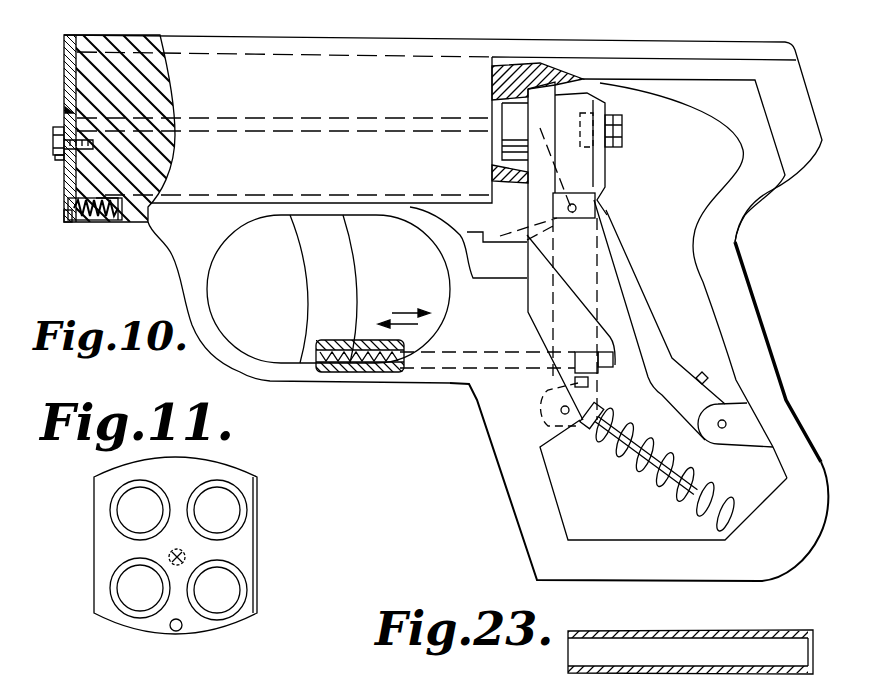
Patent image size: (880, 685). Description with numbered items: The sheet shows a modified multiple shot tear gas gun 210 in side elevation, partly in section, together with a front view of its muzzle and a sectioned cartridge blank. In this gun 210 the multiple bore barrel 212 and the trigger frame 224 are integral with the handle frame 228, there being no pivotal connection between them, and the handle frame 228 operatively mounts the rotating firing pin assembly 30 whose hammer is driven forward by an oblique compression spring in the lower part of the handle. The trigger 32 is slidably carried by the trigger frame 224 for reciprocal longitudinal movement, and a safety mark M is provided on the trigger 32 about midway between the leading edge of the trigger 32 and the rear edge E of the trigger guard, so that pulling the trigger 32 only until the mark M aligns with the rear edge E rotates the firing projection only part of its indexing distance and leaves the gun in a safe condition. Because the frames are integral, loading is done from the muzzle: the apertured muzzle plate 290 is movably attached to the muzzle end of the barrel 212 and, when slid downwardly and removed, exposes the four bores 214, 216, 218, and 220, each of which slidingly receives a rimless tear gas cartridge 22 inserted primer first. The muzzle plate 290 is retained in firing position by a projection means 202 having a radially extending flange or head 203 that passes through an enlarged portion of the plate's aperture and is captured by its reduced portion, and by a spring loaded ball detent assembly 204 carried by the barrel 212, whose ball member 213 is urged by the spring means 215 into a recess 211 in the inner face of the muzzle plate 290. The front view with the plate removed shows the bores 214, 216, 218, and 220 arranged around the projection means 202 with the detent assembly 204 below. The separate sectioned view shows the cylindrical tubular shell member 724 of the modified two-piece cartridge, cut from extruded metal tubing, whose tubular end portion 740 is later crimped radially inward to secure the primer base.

In FIG. 10, the multiple shot tear gas gun 210 is at (545, 40).
In FIG. 10, the multiple bore barrel 212 is at (337, 32).
In FIG. 11, the multiple bore barrel 212 is at (207, 461).
In FIG. 10, the apertured muzzle plate 290 is at (76, 36).
In FIG. 10, the projection means 202 is at (55, 127).
In FIG. 11, the projection means 202 is at (190, 554).
In FIG. 10, the radially extending flange or head 203 is at (60, 161).
In FIG. 10, the recess 211 is at (66, 213).
In FIG. 10, the ball member 213 is at (70, 226).
In FIG. 10, the spring loaded ball detent assembly 204 is at (88, 224).
In FIG. 11, the spring loaded ball detent assembly 204 is at (175, 633).
In FIG. 10, the spring means 215 is at (100, 222).
In FIG. 10, the trigger frame 224 is at (182, 273).
In FIG. 10, the trigger 32 is at (313, 264).
In FIG. 10, the safety mark M is at (358, 259).
In FIG. 10, the rear edge of trigger guard E is at (452, 285).
In FIG. 10, the rotating firing pin assembly 30 is at (624, 119).
In FIG. 10, the handle frame 228 is at (535, 538).
In FIG. 11, the tear gas cartridge 22 is at (127, 485).
In FIG. 11, the bore 214 is at (118, 508).
In FIG. 11, the bore 220 is at (240, 513).
In FIG. 11, the bore 216 is at (120, 590).
In FIG. 11, the bore 218 is at (238, 590).
In FIG. 23, the cylindrical tubular shell member 724 is at (696, 632).
In FIG. 23, the tubular end portion 740 is at (812, 627).